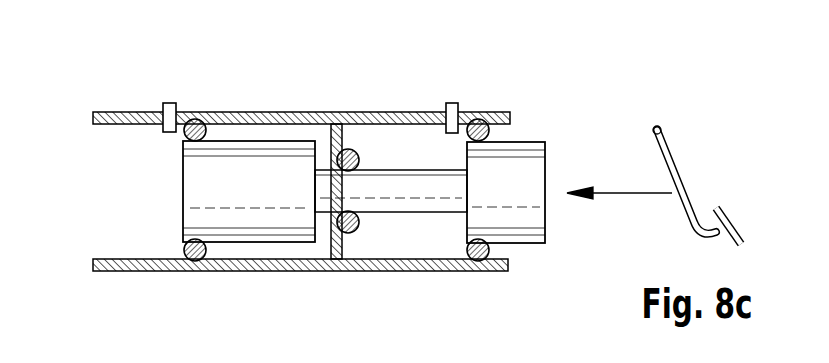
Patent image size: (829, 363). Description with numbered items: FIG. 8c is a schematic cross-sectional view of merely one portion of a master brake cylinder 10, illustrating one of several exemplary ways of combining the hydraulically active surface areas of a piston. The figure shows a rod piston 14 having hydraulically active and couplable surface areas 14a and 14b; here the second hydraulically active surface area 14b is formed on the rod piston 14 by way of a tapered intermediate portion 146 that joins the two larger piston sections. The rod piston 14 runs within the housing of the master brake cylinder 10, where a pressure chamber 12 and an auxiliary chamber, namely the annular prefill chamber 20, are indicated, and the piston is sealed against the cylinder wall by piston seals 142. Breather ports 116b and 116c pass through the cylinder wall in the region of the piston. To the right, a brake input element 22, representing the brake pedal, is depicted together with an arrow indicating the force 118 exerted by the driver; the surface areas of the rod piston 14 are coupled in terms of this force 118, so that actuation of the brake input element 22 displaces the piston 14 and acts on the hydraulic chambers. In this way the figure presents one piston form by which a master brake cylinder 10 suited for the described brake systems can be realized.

The master brake cylinder 10 is at (365, 112).
The pressure chamber 12 is at (110, 142).
The annular prefill chamber 20 is at (405, 130).
The breather port 116b is at (169, 112).
The breather port 116c is at (450, 112).
The rod piston 14 is at (337, 231).
The first hydraulically active surface area 14a is at (181, 213).
The second hydraulically active surface area 14b is at (466, 213).
The tapered intermediate portion 146 is at (407, 202).
The piston seal 142 is at (195, 262).
The brake input element 22 is at (668, 157).
The force 118 is at (628, 193).